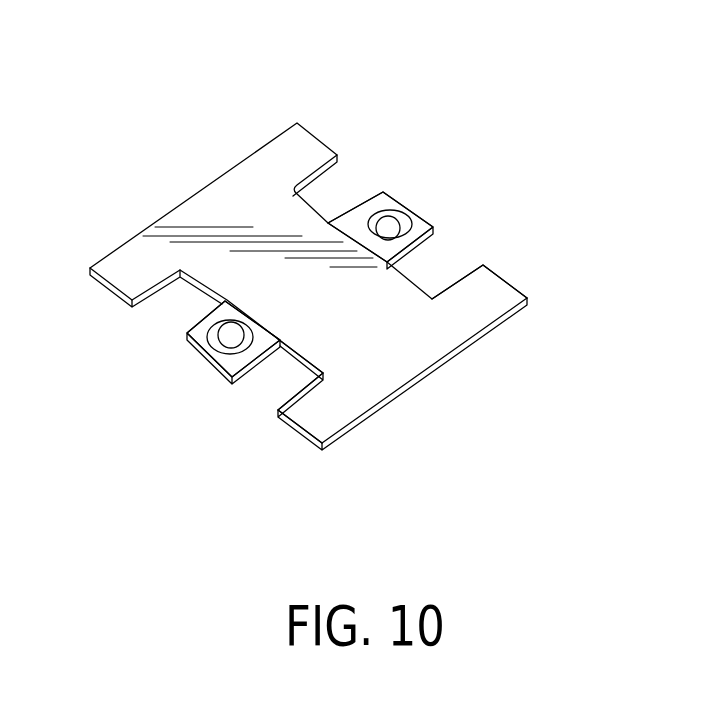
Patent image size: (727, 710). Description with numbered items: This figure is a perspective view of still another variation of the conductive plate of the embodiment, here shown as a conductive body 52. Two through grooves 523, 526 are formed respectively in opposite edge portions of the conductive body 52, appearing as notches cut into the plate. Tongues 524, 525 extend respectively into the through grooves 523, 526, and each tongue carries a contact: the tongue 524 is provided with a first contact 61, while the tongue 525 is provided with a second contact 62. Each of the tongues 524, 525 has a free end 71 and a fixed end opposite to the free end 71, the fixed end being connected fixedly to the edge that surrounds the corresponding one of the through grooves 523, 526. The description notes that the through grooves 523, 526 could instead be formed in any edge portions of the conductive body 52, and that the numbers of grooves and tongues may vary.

The conductive body 52 is at (278, 148).
The first contact 61 is at (383, 222).
The second contact 62 is at (230, 340).
The free end 71 is at (413, 218).
The through groove 523 is at (445, 272).
The tongue 524 is at (430, 242).
The tongue 525 is at (230, 378).
The through groove 526 is at (280, 387).